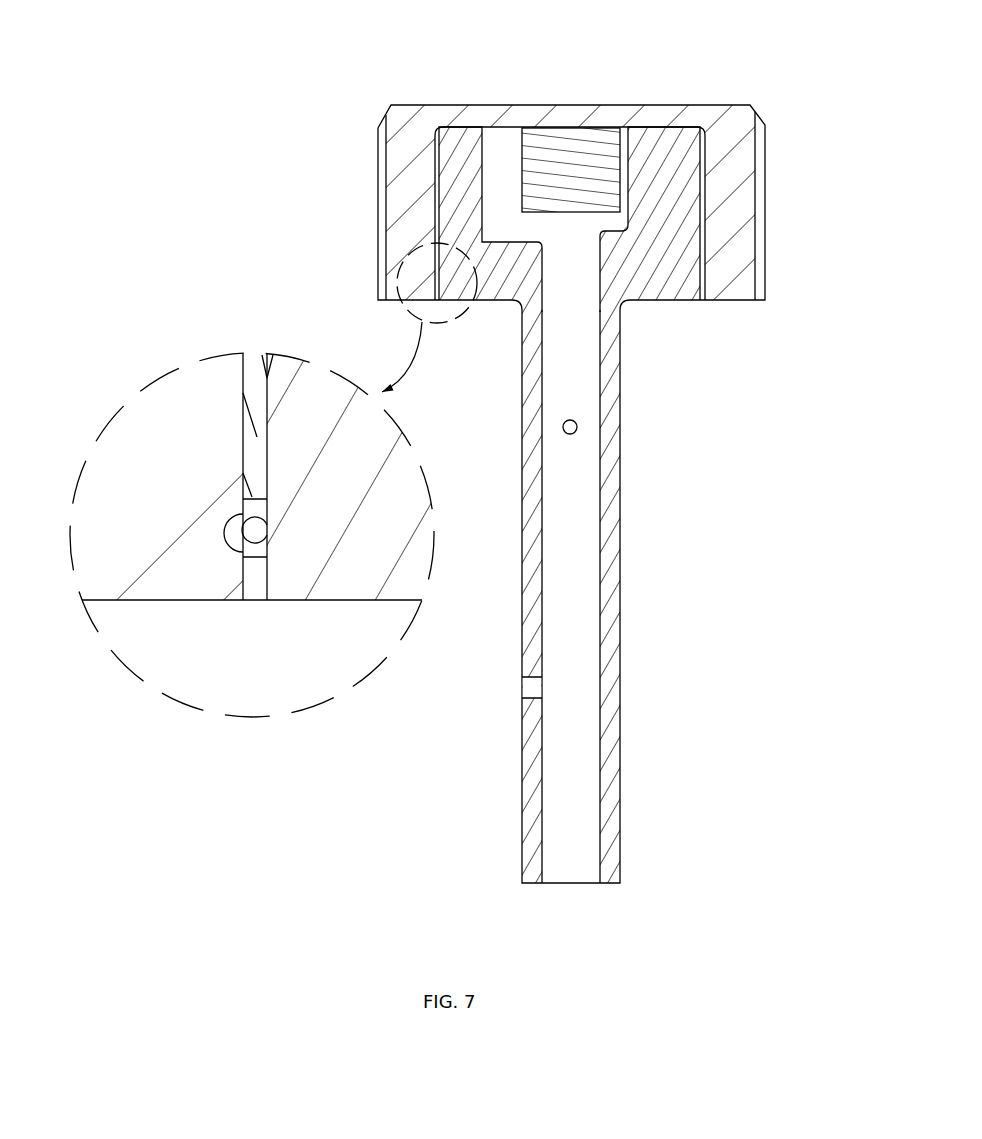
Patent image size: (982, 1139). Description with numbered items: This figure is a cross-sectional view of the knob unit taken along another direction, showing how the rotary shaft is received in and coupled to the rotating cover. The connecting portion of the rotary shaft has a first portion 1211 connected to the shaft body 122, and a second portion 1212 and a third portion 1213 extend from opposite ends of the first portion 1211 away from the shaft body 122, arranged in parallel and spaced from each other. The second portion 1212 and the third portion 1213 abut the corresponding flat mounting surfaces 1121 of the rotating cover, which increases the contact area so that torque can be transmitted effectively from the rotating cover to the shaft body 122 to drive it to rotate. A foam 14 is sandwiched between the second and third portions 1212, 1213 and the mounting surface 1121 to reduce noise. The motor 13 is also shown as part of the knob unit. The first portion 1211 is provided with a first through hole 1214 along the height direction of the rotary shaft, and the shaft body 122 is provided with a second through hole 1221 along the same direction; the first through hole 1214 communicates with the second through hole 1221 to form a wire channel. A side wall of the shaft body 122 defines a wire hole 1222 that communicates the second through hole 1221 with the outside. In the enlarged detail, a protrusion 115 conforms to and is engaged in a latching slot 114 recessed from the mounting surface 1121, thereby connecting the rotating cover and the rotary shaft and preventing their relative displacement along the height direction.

The motor 13 is at (568, 158).
The foam 14 is at (440, 213).
The first portion 1211 is at (650, 270).
The second portion 1212 is at (463, 178).
The third portion 1213 is at (668, 162).
The first through hole 1214 is at (569, 273).
The shaft body 122 is at (608, 619).
The second through hole 1221 is at (565, 507).
The wire hole 1222 is at (543, 688).
The mounting surface 1121 is at (240, 457).
The latching slot 114 is at (230, 533).
The protrusion 115 is at (257, 533).